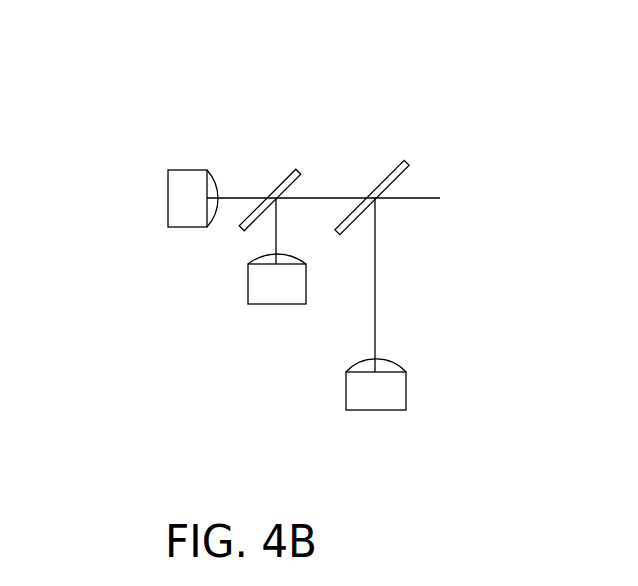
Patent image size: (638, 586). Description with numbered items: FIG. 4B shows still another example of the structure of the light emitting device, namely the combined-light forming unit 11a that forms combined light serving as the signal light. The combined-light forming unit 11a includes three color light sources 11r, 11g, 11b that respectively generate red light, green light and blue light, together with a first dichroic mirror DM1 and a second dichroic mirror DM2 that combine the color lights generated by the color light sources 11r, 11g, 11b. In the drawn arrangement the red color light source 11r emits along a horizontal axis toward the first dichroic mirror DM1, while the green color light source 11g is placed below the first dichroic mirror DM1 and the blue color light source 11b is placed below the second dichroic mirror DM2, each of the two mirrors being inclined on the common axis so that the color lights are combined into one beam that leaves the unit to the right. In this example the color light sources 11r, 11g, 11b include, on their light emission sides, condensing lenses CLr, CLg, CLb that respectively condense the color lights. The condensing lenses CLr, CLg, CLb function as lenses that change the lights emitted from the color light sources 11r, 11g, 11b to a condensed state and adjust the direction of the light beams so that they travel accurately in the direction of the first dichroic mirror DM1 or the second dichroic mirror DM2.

The combined-light forming unit 11a is at (177, 187).
The color light source 11r is at (165, 237).
The color light source 11g is at (253, 318).
The color light source 11b is at (360, 427).
The condensing lens CLr is at (212, 187).
The condensing lens CLg is at (293, 260).
The condensing lens CLb is at (398, 368).
The first dichroic mirror DM1 is at (283, 183).
The second dichroic mirror DM2 is at (373, 190).